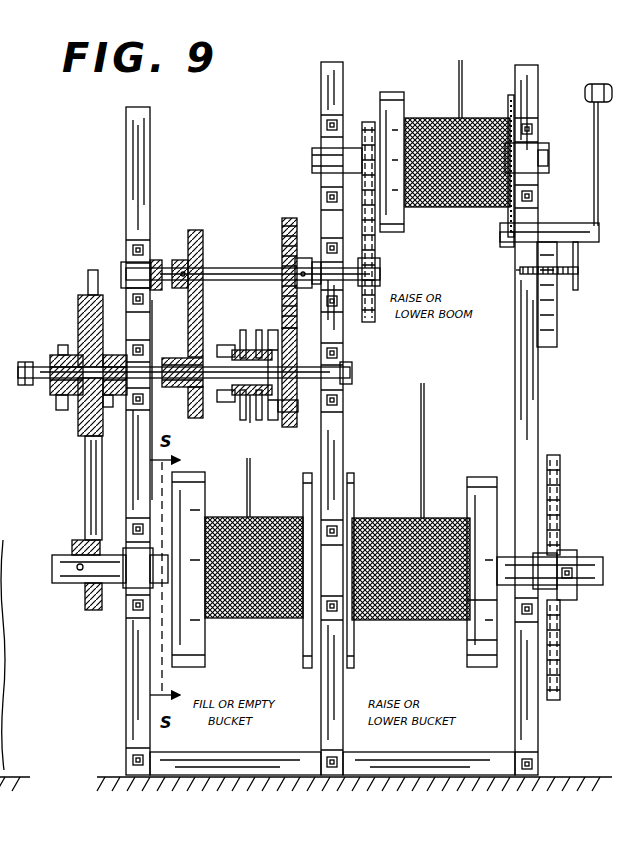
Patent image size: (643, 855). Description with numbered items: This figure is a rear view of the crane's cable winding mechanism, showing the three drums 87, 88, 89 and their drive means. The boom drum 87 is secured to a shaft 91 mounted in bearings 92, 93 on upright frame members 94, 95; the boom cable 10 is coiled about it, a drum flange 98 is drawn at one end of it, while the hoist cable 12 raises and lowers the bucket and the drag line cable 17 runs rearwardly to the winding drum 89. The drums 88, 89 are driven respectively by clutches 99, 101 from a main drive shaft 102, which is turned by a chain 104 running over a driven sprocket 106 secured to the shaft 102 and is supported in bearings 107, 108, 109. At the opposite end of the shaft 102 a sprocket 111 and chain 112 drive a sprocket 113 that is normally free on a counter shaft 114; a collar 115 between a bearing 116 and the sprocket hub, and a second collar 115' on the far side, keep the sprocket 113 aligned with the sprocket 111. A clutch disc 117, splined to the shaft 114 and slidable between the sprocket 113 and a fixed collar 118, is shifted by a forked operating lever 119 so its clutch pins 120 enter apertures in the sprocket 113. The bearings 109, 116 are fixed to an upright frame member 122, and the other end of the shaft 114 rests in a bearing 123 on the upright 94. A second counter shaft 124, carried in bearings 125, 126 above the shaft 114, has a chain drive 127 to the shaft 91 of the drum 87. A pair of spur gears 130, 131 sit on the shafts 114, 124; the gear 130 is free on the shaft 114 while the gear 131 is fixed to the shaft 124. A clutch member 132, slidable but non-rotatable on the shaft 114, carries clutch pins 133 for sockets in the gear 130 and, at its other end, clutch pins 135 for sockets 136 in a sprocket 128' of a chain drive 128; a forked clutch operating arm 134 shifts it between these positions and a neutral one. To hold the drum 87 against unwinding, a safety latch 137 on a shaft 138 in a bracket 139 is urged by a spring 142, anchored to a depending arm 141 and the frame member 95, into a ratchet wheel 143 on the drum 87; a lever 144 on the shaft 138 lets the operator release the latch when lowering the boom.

The boom cable 10 is at (462, 72).
The hoist cable 12 is at (426, 410).
The drag line cable 17 is at (247, 462).
The drum 87 is at (470, 215).
The drum 88 is at (416, 626).
The drum 89 is at (249, 624).
The shaft 91 is at (366, 122).
The bearing 92 is at (325, 150).
The bearing 93 is at (530, 152).
The upright frame member 94 is at (321, 88).
The upright frame member 95 is at (530, 90).
The drum flange 98 is at (391, 90).
The clutch 99 is at (485, 477).
The clutch 101 is at (190, 472).
The main drive shaft 102 is at (52, 560).
The chain 104 is at (561, 668).
The driven sprocket 106 is at (556, 526).
The bearing 107 is at (540, 590).
The bearing 108 is at (365, 520).
The bearing 109 is at (134, 580).
The sprocket 111 is at (86, 598).
The chain 112 is at (86, 485).
The sprocket 113 is at (93, 295).
The counter shaft 114 is at (352, 372).
The collar 115 is at (116, 360).
The second collar 115' is at (117, 407).
The bearing 116 is at (152, 352).
The clutch disc 117 is at (80, 312).
The collar 118 is at (26, 362).
The forked operating lever 119 is at (60, 345).
The clutch pins 120 is at (80, 428).
The upright frame member 122 is at (134, 143).
The bearing 123 is at (346, 368).
The second counter shaft 124 is at (236, 268).
The bearing 125 is at (130, 265).
The bearing 126 is at (322, 262).
The chain drive 127 is at (376, 250).
The chain drive 128 is at (207, 293).
The sprocket 128' is at (210, 411).
The spur gear 130 is at (297, 362).
The spur gear 131 is at (282, 232).
The clutch member 132 is at (272, 330).
The clutch pins 133 is at (300, 404).
The forked clutch operating arm 134 is at (250, 423).
The clutch pins 135 is at (225, 345).
The sockets 136 is at (184, 360).
The safety latch 137 is at (516, 270).
The shaft 138 is at (506, 238).
The bracket 139 is at (545, 226).
The depending arm 141 is at (580, 280).
The spring 142 is at (562, 278).
The ratchet wheel 143 is at (508, 101).
The lever 144 is at (596, 158).